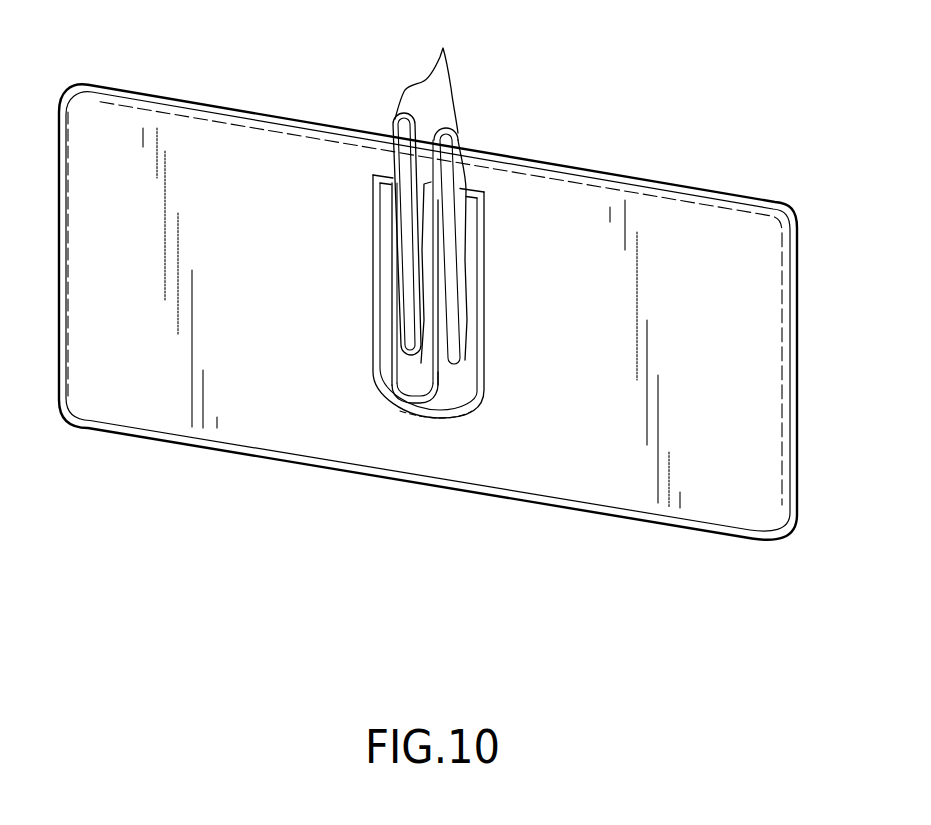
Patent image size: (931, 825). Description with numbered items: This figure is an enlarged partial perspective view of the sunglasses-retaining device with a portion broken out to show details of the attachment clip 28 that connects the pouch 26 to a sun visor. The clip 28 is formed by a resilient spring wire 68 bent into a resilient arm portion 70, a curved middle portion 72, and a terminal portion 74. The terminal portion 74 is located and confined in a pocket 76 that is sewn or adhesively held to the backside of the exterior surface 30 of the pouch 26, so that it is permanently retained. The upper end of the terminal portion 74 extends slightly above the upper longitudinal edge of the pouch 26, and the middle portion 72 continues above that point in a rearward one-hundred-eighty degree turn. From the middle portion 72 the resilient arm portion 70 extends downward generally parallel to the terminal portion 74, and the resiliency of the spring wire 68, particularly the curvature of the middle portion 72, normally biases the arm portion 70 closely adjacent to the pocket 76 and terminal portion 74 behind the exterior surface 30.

The pouch 26 is at (790, 203).
The attachment clip 28 is at (424, 210).
The exterior surface 30 is at (600, 480).
The spring wire 68 is at (460, 177).
The resilient arm portion 70 is at (437, 374).
The curved middle portion 72 is at (443, 48).
The terminal portion 74 is at (410, 263).
The pocket 76 is at (458, 390).